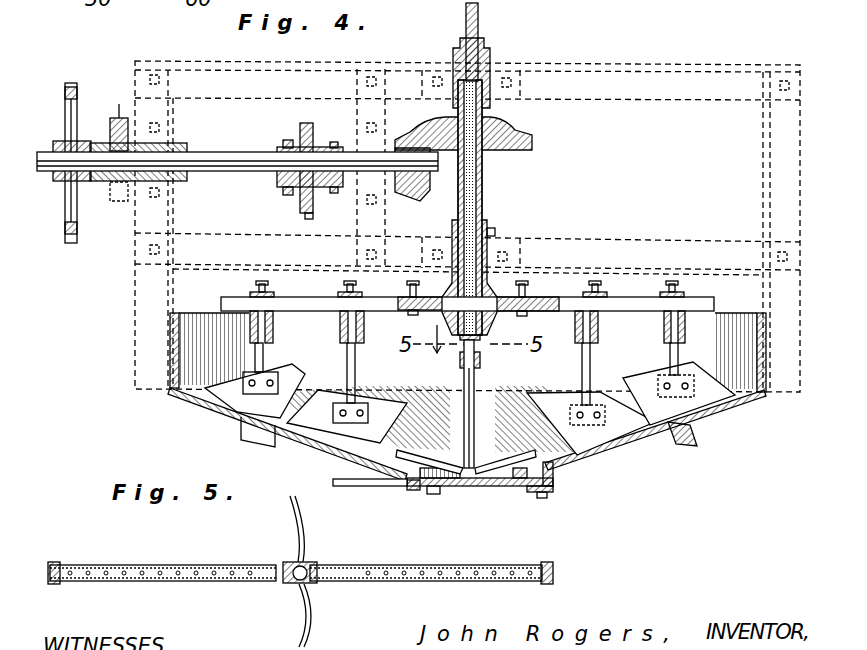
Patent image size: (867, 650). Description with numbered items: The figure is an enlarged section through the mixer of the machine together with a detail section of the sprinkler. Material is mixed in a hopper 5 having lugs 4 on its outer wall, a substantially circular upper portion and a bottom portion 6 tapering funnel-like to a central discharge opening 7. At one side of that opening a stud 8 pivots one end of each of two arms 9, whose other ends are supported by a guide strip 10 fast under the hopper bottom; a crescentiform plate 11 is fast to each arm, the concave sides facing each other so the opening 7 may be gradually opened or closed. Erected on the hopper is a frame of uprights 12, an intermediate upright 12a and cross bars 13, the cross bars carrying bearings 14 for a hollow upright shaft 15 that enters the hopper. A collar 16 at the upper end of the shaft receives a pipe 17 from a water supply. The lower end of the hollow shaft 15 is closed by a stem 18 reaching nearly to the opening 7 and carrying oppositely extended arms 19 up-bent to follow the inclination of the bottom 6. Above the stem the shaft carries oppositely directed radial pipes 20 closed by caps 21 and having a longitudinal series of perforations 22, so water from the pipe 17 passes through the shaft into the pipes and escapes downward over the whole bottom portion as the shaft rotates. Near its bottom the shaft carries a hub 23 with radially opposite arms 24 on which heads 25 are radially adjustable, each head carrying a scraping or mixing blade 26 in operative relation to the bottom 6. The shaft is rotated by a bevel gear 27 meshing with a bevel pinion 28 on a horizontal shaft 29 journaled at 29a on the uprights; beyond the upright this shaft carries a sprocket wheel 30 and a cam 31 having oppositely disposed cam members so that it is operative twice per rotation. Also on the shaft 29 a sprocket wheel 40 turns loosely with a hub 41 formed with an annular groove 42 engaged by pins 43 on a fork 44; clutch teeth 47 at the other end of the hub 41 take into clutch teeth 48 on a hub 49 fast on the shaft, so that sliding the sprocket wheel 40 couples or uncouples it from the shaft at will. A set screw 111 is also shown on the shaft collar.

In FIG. 4, the lugs 4 is at (242, 437).
In FIG. 4, the hopper 5 is at (170, 354).
In FIG. 4, the bottom portion 6 is at (204, 404).
In FIG. 4, the discharge opening 7 is at (490, 486).
In FIG. 4, the stud 8 is at (556, 475).
In FIG. 4, the arms 9 is at (350, 487).
In FIG. 4, the guide strip 10 is at (420, 489).
In FIG. 4, the crescentiform plate 11 is at (503, 487).
In FIG. 4, the uprights 12 is at (135, 287).
In FIG. 4, the intermediate upright 12a is at (357, 90).
In FIG. 4, the cross bars 13 is at (690, 65).
In FIG. 4, the bearings 14 is at (490, 72).
In FIG. 4, the upright shaft 15 is at (483, 184).
In FIG. 5, the upright shaft 15 is at (297, 583).
In FIG. 4, the collar 16 is at (482, 48).
In FIG. 4, the pipe 17 is at (478, 18).
In FIG. 4, the stem 18 is at (476, 382).
In FIG. 5, the stem 18 is at (303, 566).
In FIG. 4, the arms 19 is at (425, 452).
In FIG. 5, the arms 19 is at (290, 522).
In FIG. 4, the pipes 20 is at (465, 347).
In FIG. 5, the pipes 20 is at (166, 565).
In FIG. 5, the caps 21 is at (55, 562).
In FIG. 4, the perforations 22 is at (468, 384).
In FIG. 5, the perforations 22 is at (128, 580).
In FIG. 4, the hub 23 is at (492, 290).
In FIG. 4, the arms 24 is at (313, 311).
In FIG. 4, the heads 25 is at (345, 298).
In FIG. 4, the scraping or mixing blade 26 is at (280, 400).
In FIG. 4, the bevel gear 27 is at (531, 140).
In FIG. 4, the bevel pinion 28 is at (417, 186).
In FIG. 4, the shaft 29 is at (214, 155).
In FIG. 4, the journal 29a is at (165, 182).
In FIG. 4, the sprocket wheel 30 is at (66, 216).
In FIG. 4, the cam 31 is at (112, 139).
In FIG. 4, the set screw 111 is at (121, 100).
In FIG. 4, the sprocket wheel 40 is at (306, 123).
In FIG. 4, the hub 41 is at (278, 176).
In FIG. 4, the annular groove 42 is at (268, 141).
In FIG. 4, the pins 43 is at (288, 140).
In FIG. 4, the fork 44 is at (285, 190).
In FIG. 4, the clutch teeth 47 is at (334, 142).
In FIG. 4, the clutch teeth 48 is at (312, 198).
In FIG. 4, the hub 49 is at (335, 190).